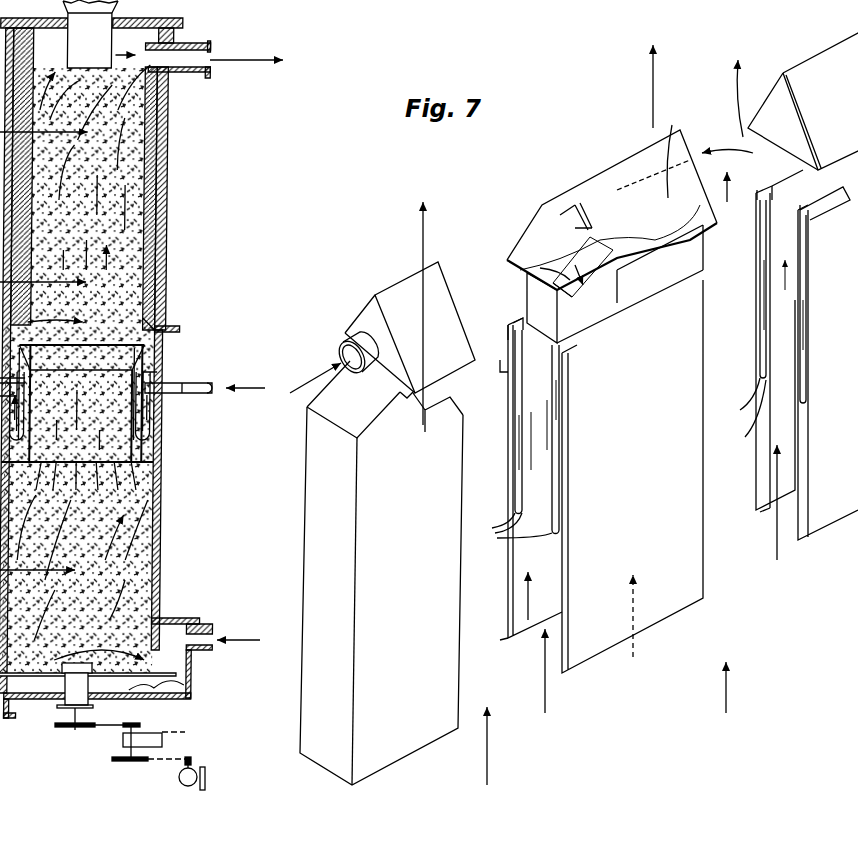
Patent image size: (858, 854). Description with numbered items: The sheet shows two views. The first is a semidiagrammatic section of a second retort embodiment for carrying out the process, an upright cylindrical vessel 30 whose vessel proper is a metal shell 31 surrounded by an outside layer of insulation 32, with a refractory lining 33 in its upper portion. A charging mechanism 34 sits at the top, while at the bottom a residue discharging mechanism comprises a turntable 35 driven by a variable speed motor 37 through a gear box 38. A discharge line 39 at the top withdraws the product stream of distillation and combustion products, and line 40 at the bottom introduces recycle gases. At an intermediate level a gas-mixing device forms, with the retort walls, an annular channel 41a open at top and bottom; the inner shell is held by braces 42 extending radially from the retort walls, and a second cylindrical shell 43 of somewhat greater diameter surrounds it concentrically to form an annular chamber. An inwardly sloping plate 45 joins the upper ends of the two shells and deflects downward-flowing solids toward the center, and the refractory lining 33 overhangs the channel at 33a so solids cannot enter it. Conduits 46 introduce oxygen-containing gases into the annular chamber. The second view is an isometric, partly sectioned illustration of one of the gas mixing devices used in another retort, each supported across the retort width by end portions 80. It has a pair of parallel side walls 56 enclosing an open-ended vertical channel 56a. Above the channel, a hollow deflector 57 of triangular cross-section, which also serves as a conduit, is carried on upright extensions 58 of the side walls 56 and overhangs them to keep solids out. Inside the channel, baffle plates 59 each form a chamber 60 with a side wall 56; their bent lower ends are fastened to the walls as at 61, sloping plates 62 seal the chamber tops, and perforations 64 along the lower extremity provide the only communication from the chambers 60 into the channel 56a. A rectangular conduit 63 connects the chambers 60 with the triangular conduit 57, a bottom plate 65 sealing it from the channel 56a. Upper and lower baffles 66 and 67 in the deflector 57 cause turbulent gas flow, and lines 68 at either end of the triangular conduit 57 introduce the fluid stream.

In FIG. 5, the upright cylindrical vessel 30 is at (172, 222).
In FIG. 5, the metal shell 31 is at (158, 128).
In FIG. 5, the outside layer of insulation 32 is at (168, 166).
In FIG. 5, the refractory lining 33 is at (150, 245).
In FIG. 5, the overhang of refractory lining 33a is at (150, 322).
In FIG. 5, the charging mechanism 34 is at (113, 5).
In FIG. 5, the turntable 35 is at (35, 673).
In FIG. 5, the variable speed motor 37 is at (193, 766).
In FIG. 5, the gear box 38 is at (148, 733).
In FIG. 5, the discharge line 39 is at (198, 52).
In FIG. 5, the recycle gas line 40 is at (210, 626).
In FIG. 5, the annular channel 41a is at (153, 438).
In FIG. 5, the braces 42 is at (150, 473).
In FIG. 5, the second cylindrical shell 43 is at (165, 405).
In FIG. 5, the inwardly sloping plate 45 is at (150, 357).
In FIG. 5, the conduits 46 is at (200, 383).
In FIG. 7, the side walls 56 is at (508, 600).
In FIG. 7, the vertical channel 56a is at (522, 645).
In FIG. 7, the deflector 57 is at (448, 300).
In FIG. 7, the upright extensions 58 is at (430, 405).
In FIG. 7, the baffle plates 59 is at (514, 432).
In FIG. 7, the chambers 60 is at (515, 362).
In FIG. 7, the welded fastening 61 is at (512, 500).
In FIG. 7, the sloping plates 62 is at (530, 390).
In FIG. 7, the rectangular conduit 63 is at (525, 292).
In FIG. 7, the perforations 64 is at (505, 535).
In FIG. 7, the bottom plate 65 is at (512, 373).
In FIG. 7, the upper baffles 66 is at (572, 210).
In FIG. 7, the lower baffles 67 is at (676, 150).
In FIG. 7, the lines 68 is at (340, 345).
In FIG. 7, the end portions 80 is at (375, 715).